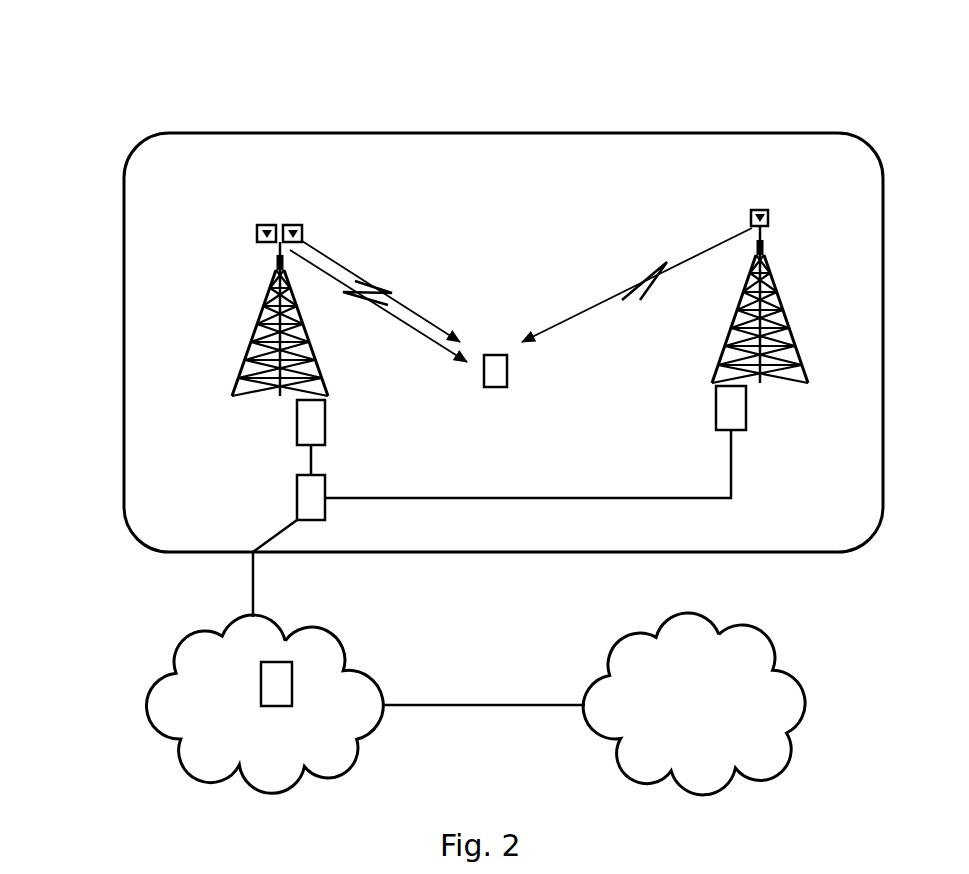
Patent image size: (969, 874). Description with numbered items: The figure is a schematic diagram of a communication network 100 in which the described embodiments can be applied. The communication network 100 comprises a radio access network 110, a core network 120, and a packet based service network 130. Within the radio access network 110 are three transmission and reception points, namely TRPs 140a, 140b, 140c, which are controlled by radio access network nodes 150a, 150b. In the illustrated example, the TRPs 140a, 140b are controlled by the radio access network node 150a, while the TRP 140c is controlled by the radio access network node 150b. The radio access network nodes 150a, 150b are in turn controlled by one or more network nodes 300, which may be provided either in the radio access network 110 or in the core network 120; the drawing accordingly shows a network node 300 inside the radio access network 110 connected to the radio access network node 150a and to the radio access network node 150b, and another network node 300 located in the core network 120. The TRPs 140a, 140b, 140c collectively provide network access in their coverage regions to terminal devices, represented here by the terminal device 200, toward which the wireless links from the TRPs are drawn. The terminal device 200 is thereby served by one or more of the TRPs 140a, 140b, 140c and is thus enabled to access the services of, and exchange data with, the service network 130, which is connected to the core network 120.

The communication network 100 is at (200, 46).
The radio access network 110 is at (124, 383).
The core network 120 is at (238, 681).
The packet based service network 130 is at (727, 721).
The TRP 140a is at (257, 235).
The TRP 140b is at (302, 236).
The TRP 140c is at (768, 218).
The radio access network node 150a is at (303, 426).
The radio access network node 150b is at (735, 405).
The terminal device 200 is at (507, 370).
The network node 300 is at (297, 497).